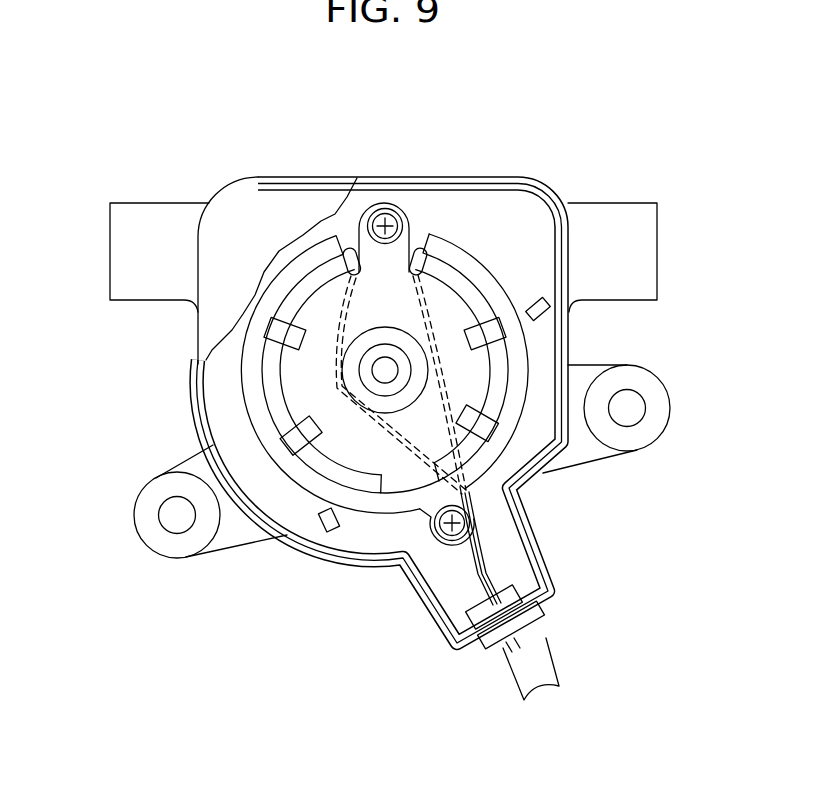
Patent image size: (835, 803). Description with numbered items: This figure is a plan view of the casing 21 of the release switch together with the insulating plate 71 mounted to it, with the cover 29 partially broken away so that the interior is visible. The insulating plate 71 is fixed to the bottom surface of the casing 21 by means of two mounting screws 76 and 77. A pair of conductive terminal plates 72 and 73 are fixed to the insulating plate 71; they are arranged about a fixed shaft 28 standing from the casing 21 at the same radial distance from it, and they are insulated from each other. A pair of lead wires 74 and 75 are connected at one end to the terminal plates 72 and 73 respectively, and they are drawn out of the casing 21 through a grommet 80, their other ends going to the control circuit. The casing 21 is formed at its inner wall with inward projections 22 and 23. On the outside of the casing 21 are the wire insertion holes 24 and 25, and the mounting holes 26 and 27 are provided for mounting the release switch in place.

The casing 21 is at (503, 177).
The inward projection 22 is at (540, 318).
The inward projection 23 is at (330, 525).
The wire insertion hole 24 is at (658, 240).
The wire insertion hole 25 is at (110, 244).
The mounting hole 26 is at (640, 408).
The mounting hole 27 is at (170, 518).
The fixed shaft 28 is at (384, 348).
The cover 29 is at (241, 195).
The insulating plate 71 is at (447, 238).
The conductive terminal plate 72 is at (450, 274).
The conductive terminal plate 73 is at (275, 343).
The lead wire 74 is at (480, 574).
The lead wire 75 is at (493, 556).
The mounting screw 76 is at (388, 206).
The mounting screw 77 is at (437, 524).
The grommet 80 is at (538, 618).